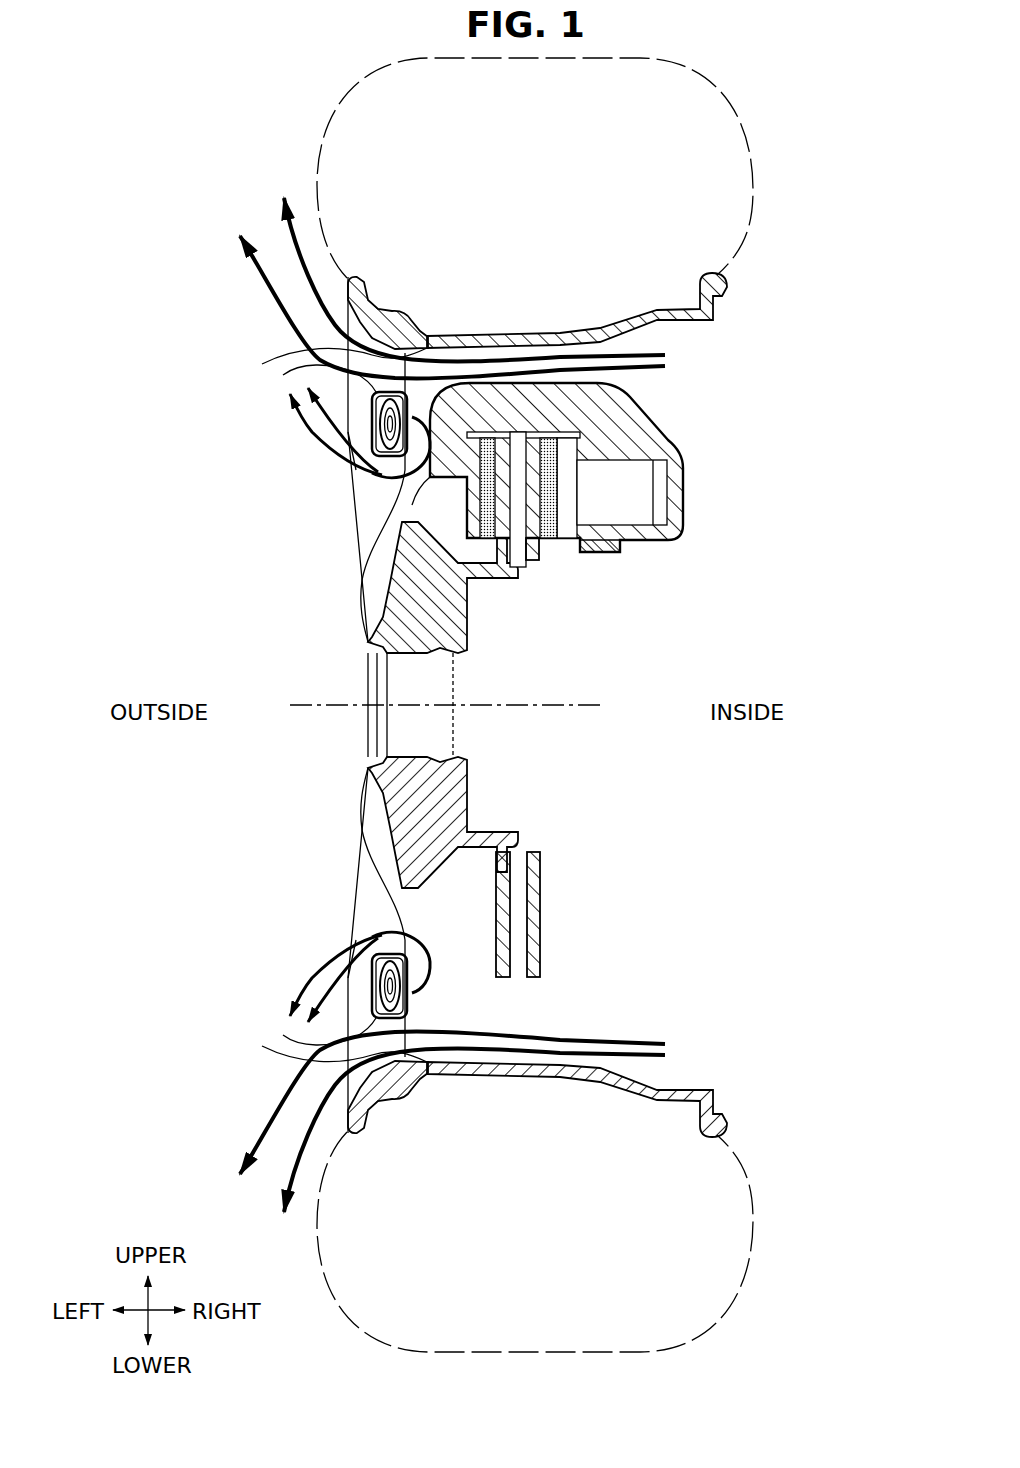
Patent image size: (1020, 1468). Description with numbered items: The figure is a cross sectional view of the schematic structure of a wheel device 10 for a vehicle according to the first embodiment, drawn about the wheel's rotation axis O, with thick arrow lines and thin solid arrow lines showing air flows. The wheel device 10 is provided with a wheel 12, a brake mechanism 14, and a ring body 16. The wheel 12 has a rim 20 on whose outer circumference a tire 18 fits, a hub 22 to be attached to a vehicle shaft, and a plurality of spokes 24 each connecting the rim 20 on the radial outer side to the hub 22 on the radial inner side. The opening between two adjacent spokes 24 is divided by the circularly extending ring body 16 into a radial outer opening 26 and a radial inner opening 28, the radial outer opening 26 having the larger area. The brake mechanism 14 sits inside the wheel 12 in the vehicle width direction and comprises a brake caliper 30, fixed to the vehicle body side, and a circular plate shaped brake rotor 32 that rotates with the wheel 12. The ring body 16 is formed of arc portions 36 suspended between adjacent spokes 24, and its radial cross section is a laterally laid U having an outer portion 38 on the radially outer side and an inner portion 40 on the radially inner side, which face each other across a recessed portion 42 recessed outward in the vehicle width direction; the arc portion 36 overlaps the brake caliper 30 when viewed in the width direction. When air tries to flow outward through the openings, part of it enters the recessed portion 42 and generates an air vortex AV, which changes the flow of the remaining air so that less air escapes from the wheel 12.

The wheel device 10 is at (823, 392).
The wheel 12 is at (320, 746).
The brake mechanism 14 is at (694, 439).
The ring body 16 is at (362, 434).
The tire 18 is at (748, 131).
The rim 20 is at (722, 311).
The hub 22 is at (438, 796).
The spoke 24 is at (358, 541).
The radial outer opening 26 is at (262, 364).
The radial inner opening 28 is at (364, 585).
The brake caliper 30 is at (631, 558).
The brake rotor 32 is at (527, 560).
The arc portion 36 is at (335, 365).
The outer portion 38 is at (420, 345).
The inner portion 40 is at (415, 480).
The recessed portion 42 is at (370, 420).
The air vortex AV is at (380, 490).
The axis O is at (540, 708).